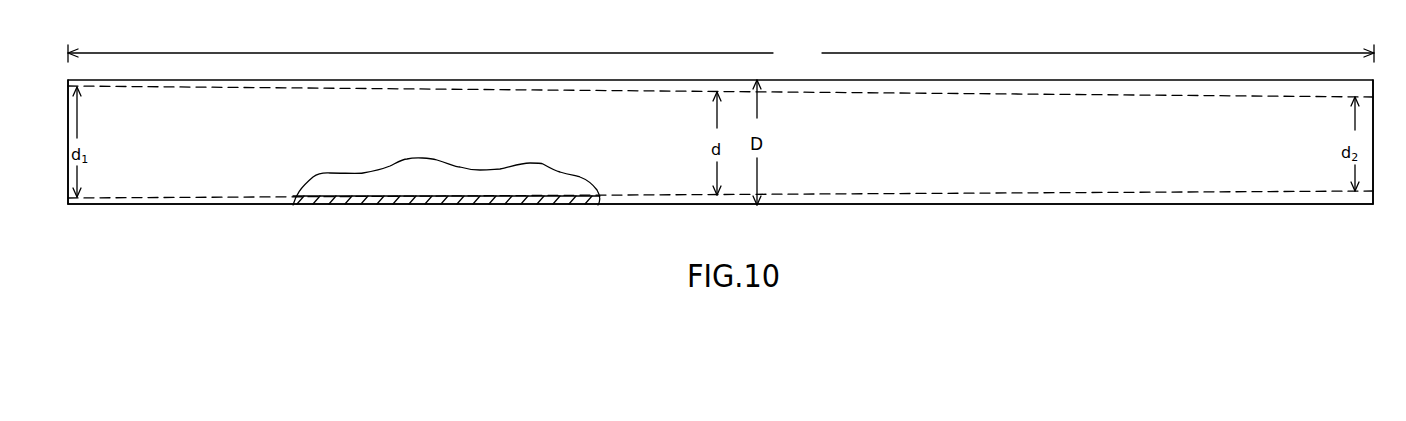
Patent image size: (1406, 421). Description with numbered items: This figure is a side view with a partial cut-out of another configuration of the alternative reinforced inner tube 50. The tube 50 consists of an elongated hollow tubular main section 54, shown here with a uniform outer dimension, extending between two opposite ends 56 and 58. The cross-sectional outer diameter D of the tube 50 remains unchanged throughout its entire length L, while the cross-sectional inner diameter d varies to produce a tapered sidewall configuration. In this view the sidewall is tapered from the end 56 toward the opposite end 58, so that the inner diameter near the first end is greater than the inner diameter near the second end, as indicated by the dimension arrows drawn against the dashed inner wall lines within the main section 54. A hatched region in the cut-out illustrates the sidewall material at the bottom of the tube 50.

The reinforced tube 50 is at (588, 28).
The elongated hollow tubular main section 54 is at (920, 205).
The end 56 is at (1373, 170).
The end 58 is at (68, 200).